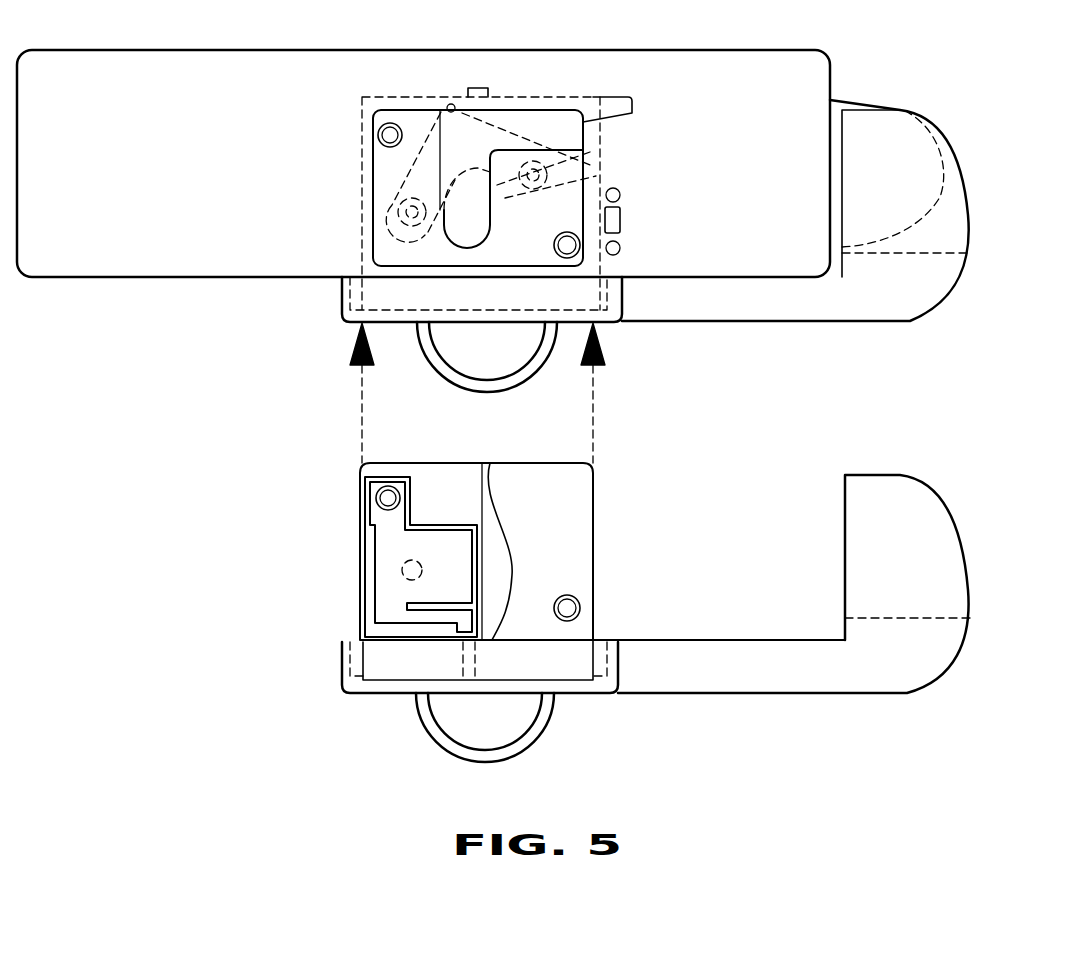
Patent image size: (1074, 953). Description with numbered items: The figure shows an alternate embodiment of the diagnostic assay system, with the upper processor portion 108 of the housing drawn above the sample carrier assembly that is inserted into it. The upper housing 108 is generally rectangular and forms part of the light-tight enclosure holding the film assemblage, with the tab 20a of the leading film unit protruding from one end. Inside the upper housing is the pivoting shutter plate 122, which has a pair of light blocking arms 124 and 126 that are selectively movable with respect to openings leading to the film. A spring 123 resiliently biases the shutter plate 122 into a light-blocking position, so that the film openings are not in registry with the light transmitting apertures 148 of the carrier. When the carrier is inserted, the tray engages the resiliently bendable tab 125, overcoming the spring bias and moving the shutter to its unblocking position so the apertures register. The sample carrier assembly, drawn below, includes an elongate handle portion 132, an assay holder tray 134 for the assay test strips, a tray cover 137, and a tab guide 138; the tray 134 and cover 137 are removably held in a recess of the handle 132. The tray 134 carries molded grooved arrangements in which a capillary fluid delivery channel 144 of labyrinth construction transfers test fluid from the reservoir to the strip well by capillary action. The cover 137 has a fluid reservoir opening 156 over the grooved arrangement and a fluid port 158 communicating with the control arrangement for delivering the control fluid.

The upper processor portion 108 is at (170, 262).
The tab 20a is at (847, 102).
The tab guide 138 is at (953, 233).
The handle portion 132 is at (724, 322).
The shutter plate 122 is at (566, 130).
The resiliently bendable tab 125 is at (475, 88).
The light blocking arm 124 is at (393, 242).
The light blocking arm 126 is at (592, 173).
The light transmitting aperture 148 is at (395, 197).
The fluid reservoir opening 156 is at (388, 128).
The spring 123 is at (620, 222).
The fluid port 158 is at (588, 260).
The assay holder tray 134 is at (600, 466).
The tray cover 137 is at (563, 535).
The capillary fluid delivery channel 144 is at (373, 558).